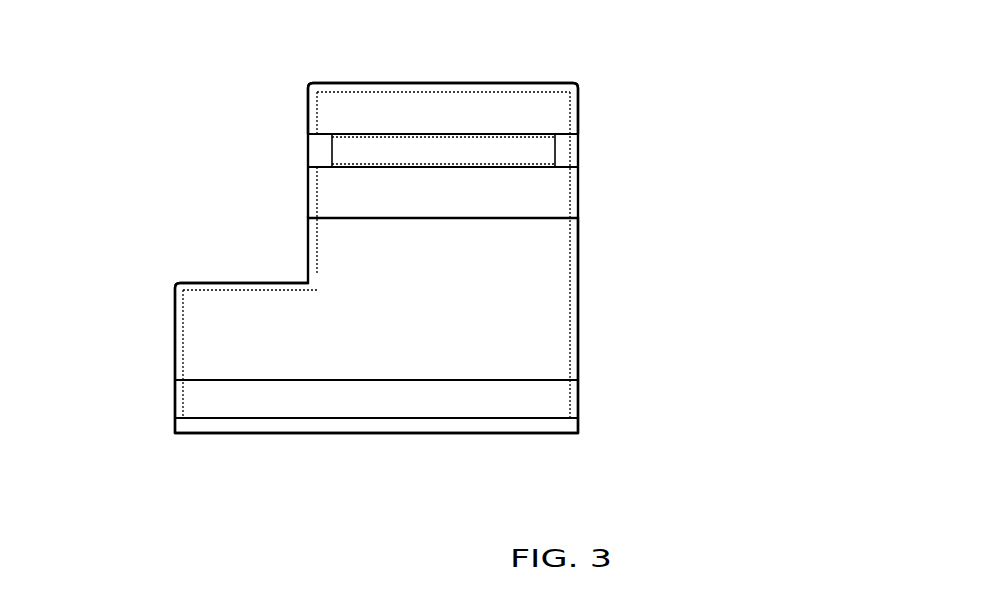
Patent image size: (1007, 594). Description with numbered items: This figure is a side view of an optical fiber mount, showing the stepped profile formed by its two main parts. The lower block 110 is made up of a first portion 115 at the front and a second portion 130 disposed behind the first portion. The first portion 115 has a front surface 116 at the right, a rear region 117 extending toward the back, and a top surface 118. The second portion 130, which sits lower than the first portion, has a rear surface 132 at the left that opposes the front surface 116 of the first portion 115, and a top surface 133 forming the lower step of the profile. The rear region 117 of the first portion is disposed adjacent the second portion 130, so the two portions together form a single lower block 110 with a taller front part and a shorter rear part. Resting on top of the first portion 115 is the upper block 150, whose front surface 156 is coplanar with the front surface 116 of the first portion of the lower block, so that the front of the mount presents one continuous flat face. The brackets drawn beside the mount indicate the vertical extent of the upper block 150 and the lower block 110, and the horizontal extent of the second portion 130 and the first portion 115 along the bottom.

The lower block 110 is at (649, 217).
The first portion 115 is at (573, 461).
The front surface 116 is at (580, 310).
The rear region 117 is at (105, 126).
The top surface 118 is at (493, 220).
The second portion 130 is at (312, 461).
The rear surface 132 is at (173, 340).
The top surface 133 is at (241, 278).
The upper block 150 is at (649, 82).
The front surface 156 is at (580, 115).